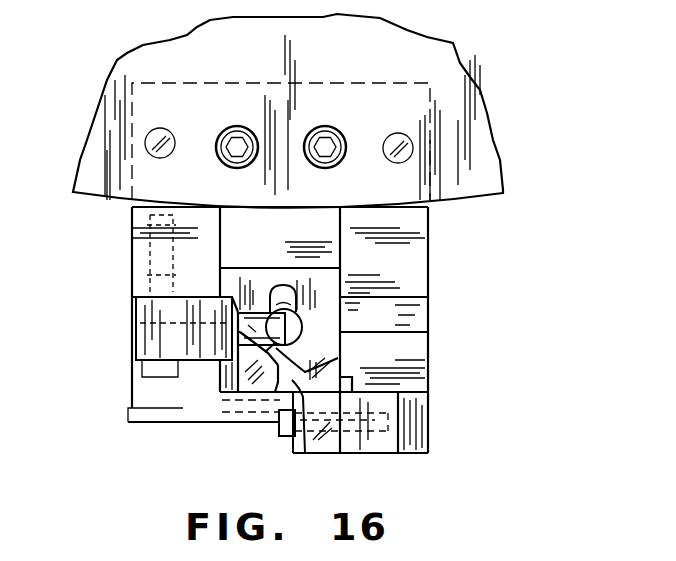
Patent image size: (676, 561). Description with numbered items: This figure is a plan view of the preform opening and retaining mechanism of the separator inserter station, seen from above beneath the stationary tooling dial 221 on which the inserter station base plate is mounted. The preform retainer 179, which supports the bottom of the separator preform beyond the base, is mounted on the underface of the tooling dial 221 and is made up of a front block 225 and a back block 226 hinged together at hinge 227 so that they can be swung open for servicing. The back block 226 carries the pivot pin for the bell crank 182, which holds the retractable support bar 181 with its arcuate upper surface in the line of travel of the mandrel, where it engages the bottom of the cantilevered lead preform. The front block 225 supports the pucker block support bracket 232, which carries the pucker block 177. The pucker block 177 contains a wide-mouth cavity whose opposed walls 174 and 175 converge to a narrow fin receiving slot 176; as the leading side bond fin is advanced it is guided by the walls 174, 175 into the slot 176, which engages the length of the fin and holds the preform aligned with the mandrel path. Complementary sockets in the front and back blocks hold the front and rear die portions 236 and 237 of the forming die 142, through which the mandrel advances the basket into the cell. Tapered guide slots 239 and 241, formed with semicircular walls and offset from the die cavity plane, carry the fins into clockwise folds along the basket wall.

The stationary tooling dial 221 is at (97, 158).
The hinge 227 is at (153, 290).
The bell crank 182 is at (208, 314).
The rear die portion 237 is at (250, 312).
The support bar 181 is at (263, 318).
The tapered guide slot 241 is at (290, 290).
The forming die 142 is at (302, 324).
The back block 226 is at (425, 252).
The preform retainer 179 is at (436, 318).
The front block 225 is at (427, 370).
The pucker block cavity wall 174 is at (305, 358).
The pucker block cavity wall 175 is at (247, 365).
The front die portion 236 is at (225, 383).
The tapered guide slot 239 is at (260, 362).
The fin receiving slot 176 is at (273, 372).
The pucker block 177 is at (300, 450).
The pucker block support bracket 232 is at (388, 443).